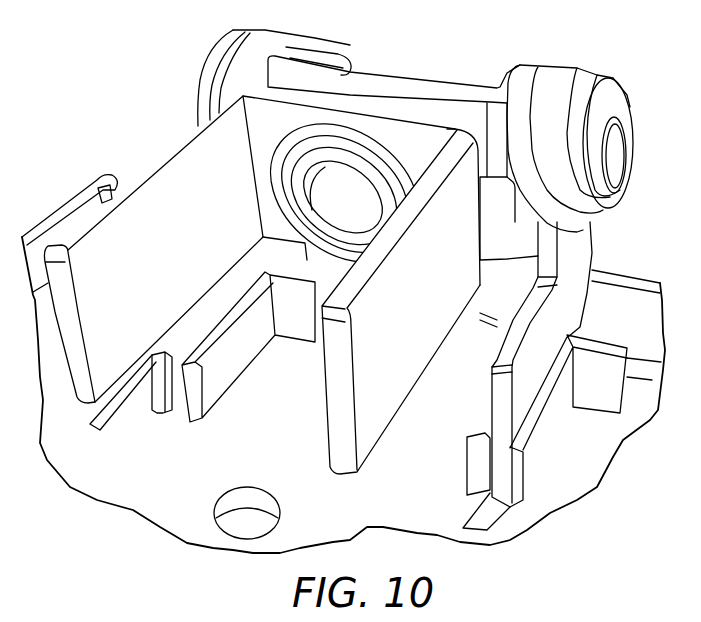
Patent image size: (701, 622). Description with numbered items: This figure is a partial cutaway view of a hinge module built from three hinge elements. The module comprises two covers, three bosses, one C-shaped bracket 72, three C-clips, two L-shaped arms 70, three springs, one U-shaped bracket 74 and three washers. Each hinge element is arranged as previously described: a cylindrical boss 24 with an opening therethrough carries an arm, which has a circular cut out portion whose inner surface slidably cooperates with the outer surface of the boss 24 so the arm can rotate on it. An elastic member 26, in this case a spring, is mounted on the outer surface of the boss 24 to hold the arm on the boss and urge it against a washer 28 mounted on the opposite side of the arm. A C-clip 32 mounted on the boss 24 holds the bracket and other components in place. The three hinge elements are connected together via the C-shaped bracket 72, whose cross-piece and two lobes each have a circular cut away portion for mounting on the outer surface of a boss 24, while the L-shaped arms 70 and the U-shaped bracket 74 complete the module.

The boss 24 is at (388, 210).
The elastic member 26 is at (283, 170).
The washer 28 is at (255, 73).
The C-clip 32 is at (330, 68).
The L-shaped arm 70 is at (590, 258).
The C-shaped bracket 72 is at (443, 90).
The U-shaped bracket 74 is at (151, 164).